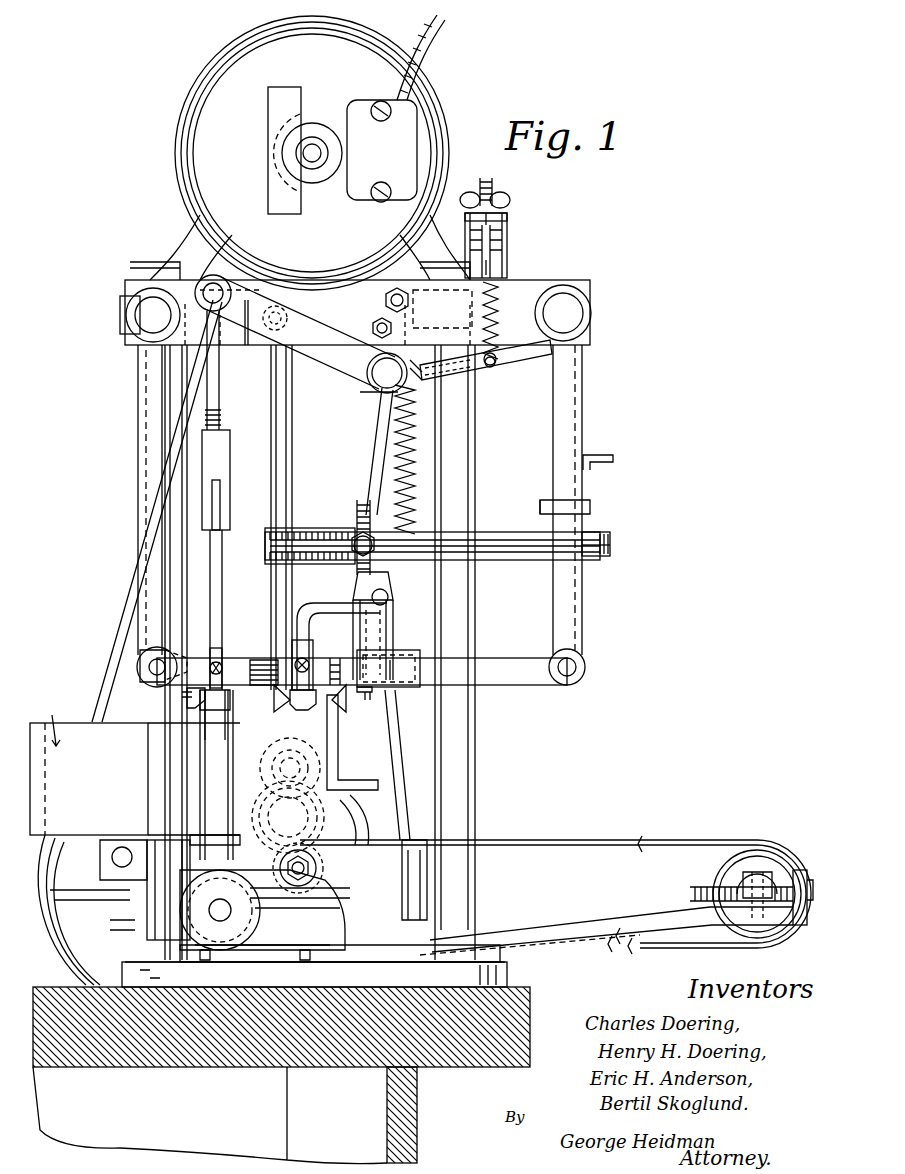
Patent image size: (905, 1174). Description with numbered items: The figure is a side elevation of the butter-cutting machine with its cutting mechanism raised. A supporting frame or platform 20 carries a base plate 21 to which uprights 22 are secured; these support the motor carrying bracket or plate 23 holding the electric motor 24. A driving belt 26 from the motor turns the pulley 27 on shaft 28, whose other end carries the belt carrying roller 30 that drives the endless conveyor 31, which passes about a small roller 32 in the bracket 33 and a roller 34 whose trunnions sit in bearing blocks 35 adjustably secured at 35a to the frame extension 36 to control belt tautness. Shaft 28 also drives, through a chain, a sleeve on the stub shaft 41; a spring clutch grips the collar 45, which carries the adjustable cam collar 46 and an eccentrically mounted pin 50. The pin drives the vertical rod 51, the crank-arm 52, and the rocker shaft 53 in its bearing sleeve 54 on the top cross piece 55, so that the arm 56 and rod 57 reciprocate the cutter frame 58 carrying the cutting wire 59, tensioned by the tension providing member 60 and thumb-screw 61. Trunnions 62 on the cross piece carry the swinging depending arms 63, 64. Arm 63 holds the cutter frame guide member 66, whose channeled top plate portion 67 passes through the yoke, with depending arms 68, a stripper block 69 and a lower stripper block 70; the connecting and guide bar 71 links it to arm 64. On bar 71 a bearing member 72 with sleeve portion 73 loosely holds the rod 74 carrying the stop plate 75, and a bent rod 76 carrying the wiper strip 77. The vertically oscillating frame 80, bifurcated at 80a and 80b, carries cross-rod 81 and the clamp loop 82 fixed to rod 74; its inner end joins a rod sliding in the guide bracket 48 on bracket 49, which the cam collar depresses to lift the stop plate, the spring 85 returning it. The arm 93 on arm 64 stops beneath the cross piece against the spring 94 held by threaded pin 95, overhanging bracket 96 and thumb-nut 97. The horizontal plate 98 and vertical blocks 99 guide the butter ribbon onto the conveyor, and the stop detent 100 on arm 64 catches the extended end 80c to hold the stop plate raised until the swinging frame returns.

The supporting frame or platform 20 is at (97, 1070).
The base plate 21 is at (508, 987).
The uprights 22 is at (182, 590).
The motor carrying bracket or plate 23 is at (92, 306).
The electric motor 24 is at (203, 90).
The driving belt 26 is at (364, 433).
The pulley 27 is at (66, 958).
The shaft 28 is at (208, 910).
The belt carrying roller 30 is at (190, 895).
The endless conveyor or belt 31 is at (655, 843).
The small roller 32 is at (301, 873).
The bracket 33 is at (288, 945).
The roller 34 is at (718, 866).
The bearing blocks 35 is at (740, 862).
The adjustable securing point 35a is at (800, 870).
The frame extension 36 is at (638, 928).
The stub shaft 41 is at (280, 800).
The collar 45 is at (300, 905).
The adjustable cam collar 46 is at (360, 812).
The guide bracket 48 is at (376, 818).
The bracket 49 is at (416, 852).
The eccentrically mounted pin 50 is at (282, 765).
The vertical rod 51 is at (271, 480).
The crank-arm 52 is at (305, 517).
The rocker shaft 53 is at (382, 398).
The bearing sleeve 54 is at (367, 362).
The top cross piece 55 is at (545, 283).
The arm 56 is at (258, 330).
The rod 57 is at (220, 422).
The cutter frame 58 is at (226, 592).
The cutting element or wire 59 is at (205, 722).
The tension providing member 60 is at (185, 697).
The thumb-screw 61 is at (222, 665).
The trunnions 62 is at (128, 322).
The depending arm 63 is at (138, 423).
The depending arm 64 is at (582, 412).
The cutter frame guide member 66 is at (150, 655).
The channeled top plate portion 67 is at (258, 662).
The depending arms 68 is at (218, 806).
The stripper block 69 is at (140, 672).
The stripper block 70 is at (205, 838).
The connecting and guide bar 71 is at (510, 660).
The bearing member 72 is at (393, 681).
The sleeve portion 73 is at (395, 622).
The vertically disposed rod 74 is at (358, 506).
The stop plate 75 is at (340, 752).
The bent rod 76 is at (318, 603).
The wiper strip or blade 77 is at (318, 668).
The vertically oscillating frame 80 is at (394, 585).
The bifurcation 80a is at (268, 537).
The bifurcation 80b is at (610, 540).
The extended end 80c is at (592, 556).
The cross-rod 81 is at (506, 534).
The clamp member or loop 82 is at (352, 538).
The spring 85 is at (393, 459).
The arm 93 is at (518, 368).
The spring 94 is at (497, 300).
The threaded pin 95 is at (494, 248).
The overhanging bracket 96 is at (508, 216).
The thumb-nut 97 is at (493, 197).
The horizontal block or plate 98 is at (110, 865).
The vertically disposed blocks 99 is at (78, 722).
The stop detent 100 is at (598, 448).